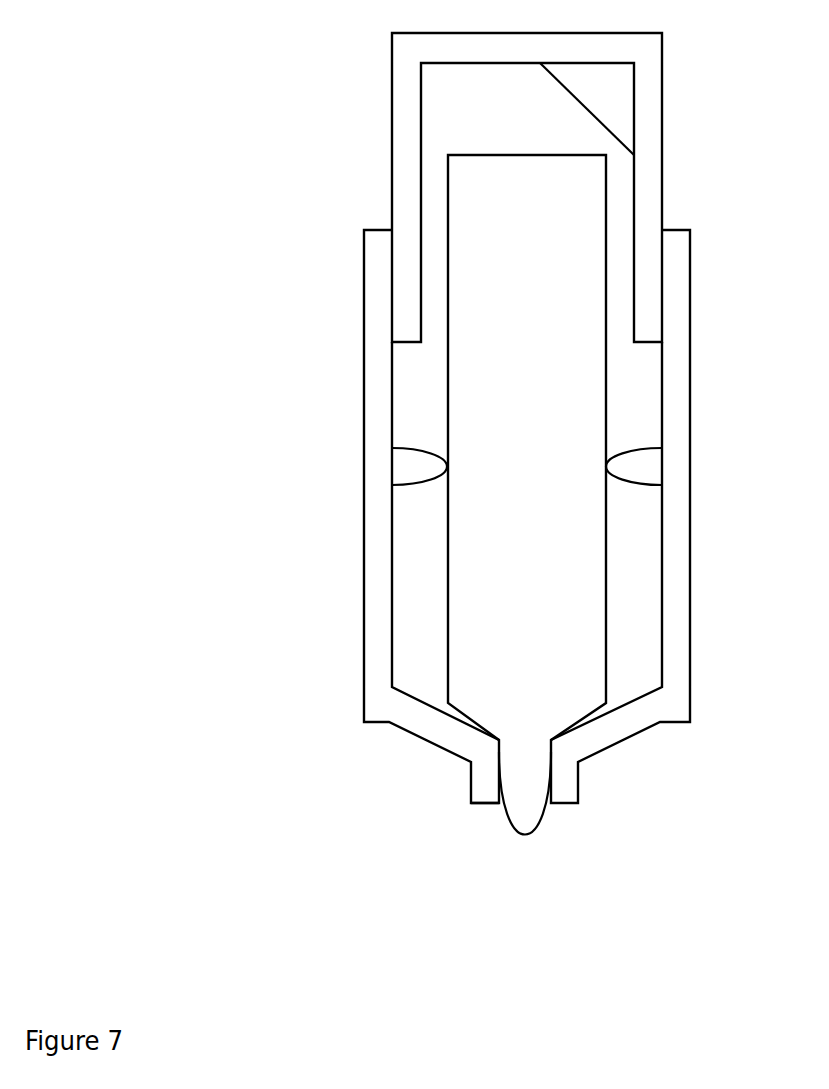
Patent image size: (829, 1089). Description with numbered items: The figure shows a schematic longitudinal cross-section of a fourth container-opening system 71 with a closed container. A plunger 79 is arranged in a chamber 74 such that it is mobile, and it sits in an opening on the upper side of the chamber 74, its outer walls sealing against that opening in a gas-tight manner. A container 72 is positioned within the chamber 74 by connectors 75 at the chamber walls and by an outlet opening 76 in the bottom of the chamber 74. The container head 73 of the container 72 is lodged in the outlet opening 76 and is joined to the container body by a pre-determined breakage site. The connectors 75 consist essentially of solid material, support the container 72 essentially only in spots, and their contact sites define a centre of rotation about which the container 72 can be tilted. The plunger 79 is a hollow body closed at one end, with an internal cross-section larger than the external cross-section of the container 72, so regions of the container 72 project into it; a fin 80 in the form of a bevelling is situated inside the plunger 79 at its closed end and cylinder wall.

The container-opening system 71 is at (320, 88).
The container 72 is at (540, 405).
The container head 73 is at (528, 780).
The chamber 74 is at (382, 360).
The connectors 75 is at (420, 466).
The outlet opening 76 is at (502, 802).
The plunger 79 is at (607, 50).
The fin 80 is at (613, 93).